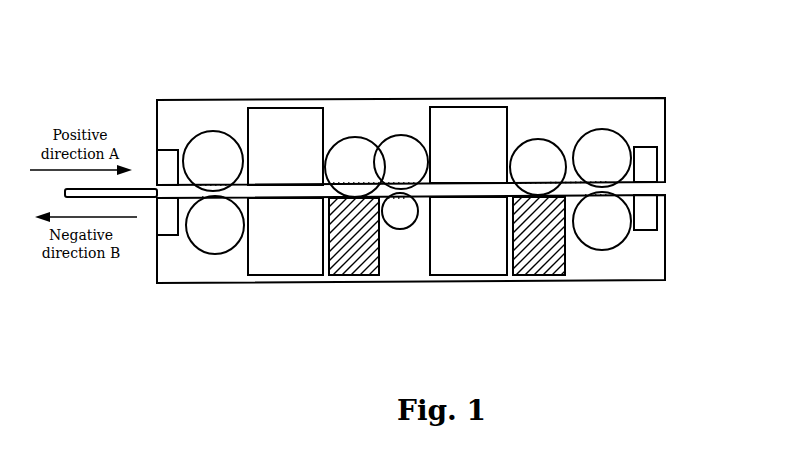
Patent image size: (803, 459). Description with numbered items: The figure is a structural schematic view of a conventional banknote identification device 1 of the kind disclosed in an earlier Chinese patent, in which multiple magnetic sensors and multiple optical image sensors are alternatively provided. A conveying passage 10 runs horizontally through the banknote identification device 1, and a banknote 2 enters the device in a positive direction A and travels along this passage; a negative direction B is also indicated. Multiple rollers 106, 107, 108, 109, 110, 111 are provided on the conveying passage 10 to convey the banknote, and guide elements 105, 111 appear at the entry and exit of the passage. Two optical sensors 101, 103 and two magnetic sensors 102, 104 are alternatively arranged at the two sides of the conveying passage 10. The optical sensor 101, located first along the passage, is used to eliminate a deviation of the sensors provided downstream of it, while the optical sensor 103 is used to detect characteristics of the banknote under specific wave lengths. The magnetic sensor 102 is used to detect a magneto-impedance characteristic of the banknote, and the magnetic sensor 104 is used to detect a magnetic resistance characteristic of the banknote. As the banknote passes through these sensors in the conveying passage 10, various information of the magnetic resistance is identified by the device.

The banknote identification device 1 is at (657, 65).
The sheet 2 is at (147, 198).
The conveying passage 10 is at (660, 188).
The optical sensor 101 is at (281, 108).
The magnetic sensor 102 is at (345, 267).
The optical sensor 103 is at (471, 107).
The magnetic sensor 104 is at (527, 273).
The outlet guide 105 is at (652, 153).
The roller 106 is at (213, 131).
The roller 107 is at (355, 138).
The roller 108 is at (404, 135).
The roller 109 is at (538, 139).
The roller 110 is at (602, 129).
The roller 111 is at (172, 150).